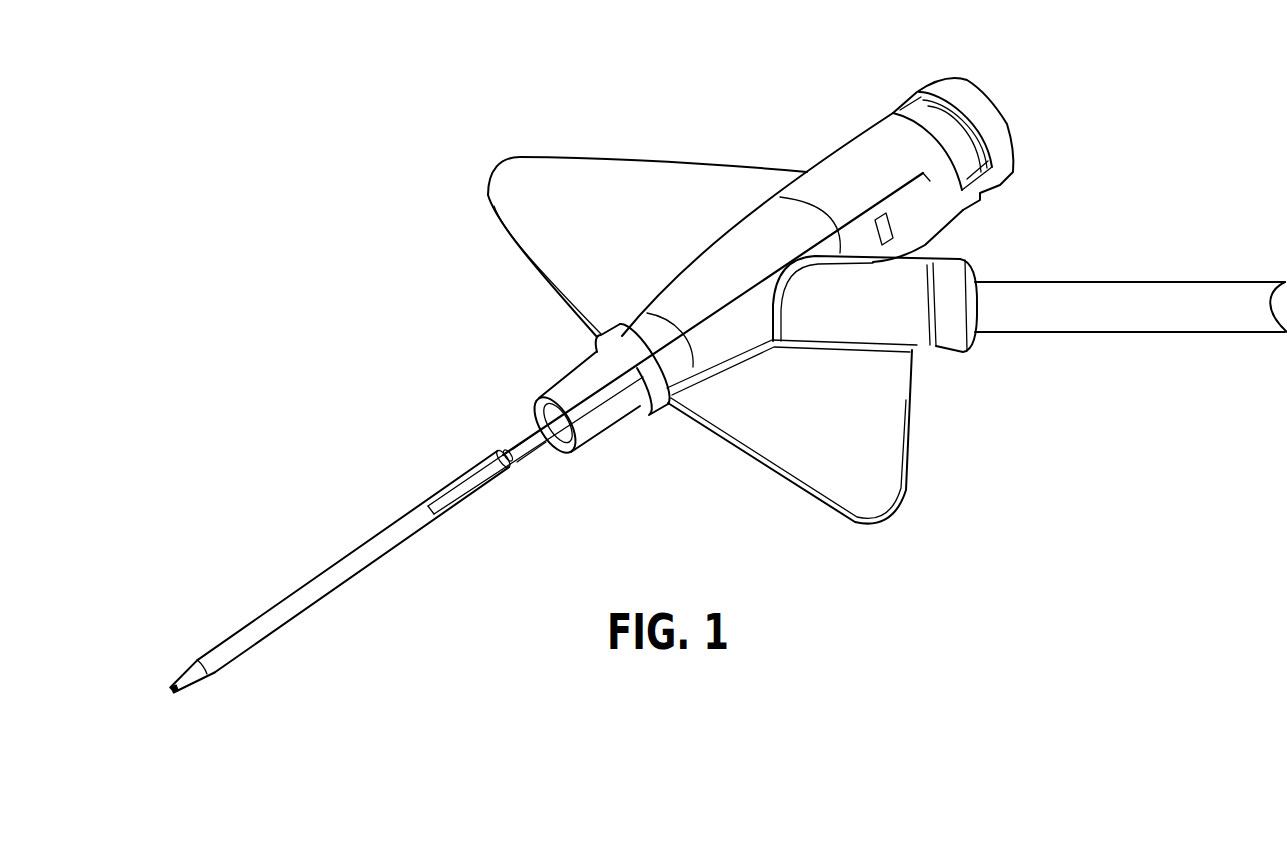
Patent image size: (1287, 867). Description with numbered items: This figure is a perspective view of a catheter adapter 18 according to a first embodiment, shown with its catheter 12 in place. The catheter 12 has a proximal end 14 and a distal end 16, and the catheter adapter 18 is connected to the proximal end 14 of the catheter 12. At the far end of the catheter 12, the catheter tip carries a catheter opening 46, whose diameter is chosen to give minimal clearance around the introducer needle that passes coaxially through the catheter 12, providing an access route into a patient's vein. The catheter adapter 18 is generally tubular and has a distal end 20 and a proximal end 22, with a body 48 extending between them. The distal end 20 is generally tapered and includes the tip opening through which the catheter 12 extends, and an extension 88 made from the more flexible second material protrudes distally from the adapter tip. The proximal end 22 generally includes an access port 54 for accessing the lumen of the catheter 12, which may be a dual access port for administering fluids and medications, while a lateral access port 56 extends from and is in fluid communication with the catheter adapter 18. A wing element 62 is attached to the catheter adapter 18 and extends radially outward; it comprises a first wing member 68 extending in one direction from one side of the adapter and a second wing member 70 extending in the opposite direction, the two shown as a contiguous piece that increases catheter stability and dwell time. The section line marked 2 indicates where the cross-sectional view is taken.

The catheter 12 is at (335, 570).
The proximal end of the catheter 14 is at (503, 506).
The distal end of the catheter 16 is at (168, 676).
The catheter opening 46 is at (168, 696).
The section line 2 is at (423, 507).
The catheter adapter 18 is at (702, 120).
The distal end of the catheter adapter 20 is at (541, 357).
The proximal end of the catheter adapter 22 is at (905, 81).
The body 48 is at (855, 175).
The access port 54 is at (992, 118).
The lateral access port 56 is at (972, 354).
The wing element 62 is at (873, 437).
The first wing member 68 is at (560, 180).
The second wing member 70 is at (785, 440).
The extension 88 is at (537, 460).